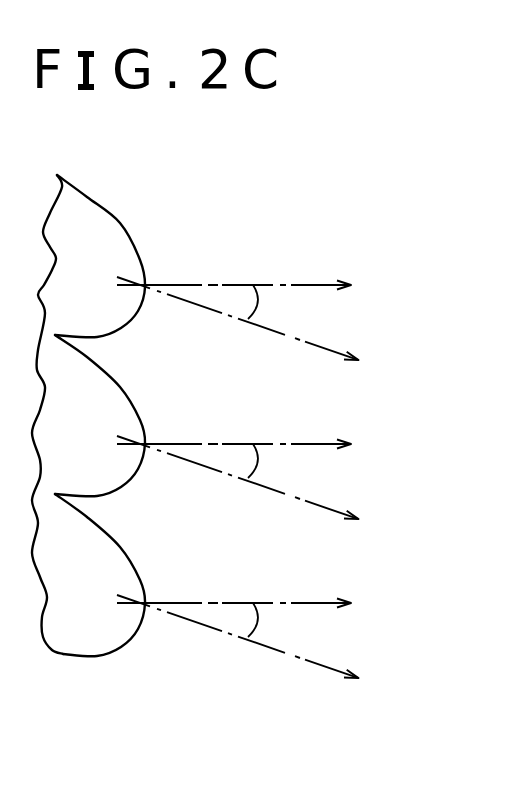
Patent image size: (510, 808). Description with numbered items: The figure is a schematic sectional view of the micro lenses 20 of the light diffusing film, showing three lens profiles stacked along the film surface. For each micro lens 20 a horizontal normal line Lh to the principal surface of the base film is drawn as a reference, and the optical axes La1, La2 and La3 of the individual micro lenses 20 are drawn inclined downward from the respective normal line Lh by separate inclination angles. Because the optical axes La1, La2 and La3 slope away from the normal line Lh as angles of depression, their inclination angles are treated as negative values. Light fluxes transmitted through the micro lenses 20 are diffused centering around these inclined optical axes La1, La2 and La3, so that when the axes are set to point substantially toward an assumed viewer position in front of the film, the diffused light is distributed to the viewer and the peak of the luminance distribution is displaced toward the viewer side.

The micro lenses 20 is at (113, 223).
The normal line Lh is at (250, 443).
The optical axis La1 is at (260, 643).
The optical axis La2 is at (260, 484).
The optical axis La3 is at (260, 325).